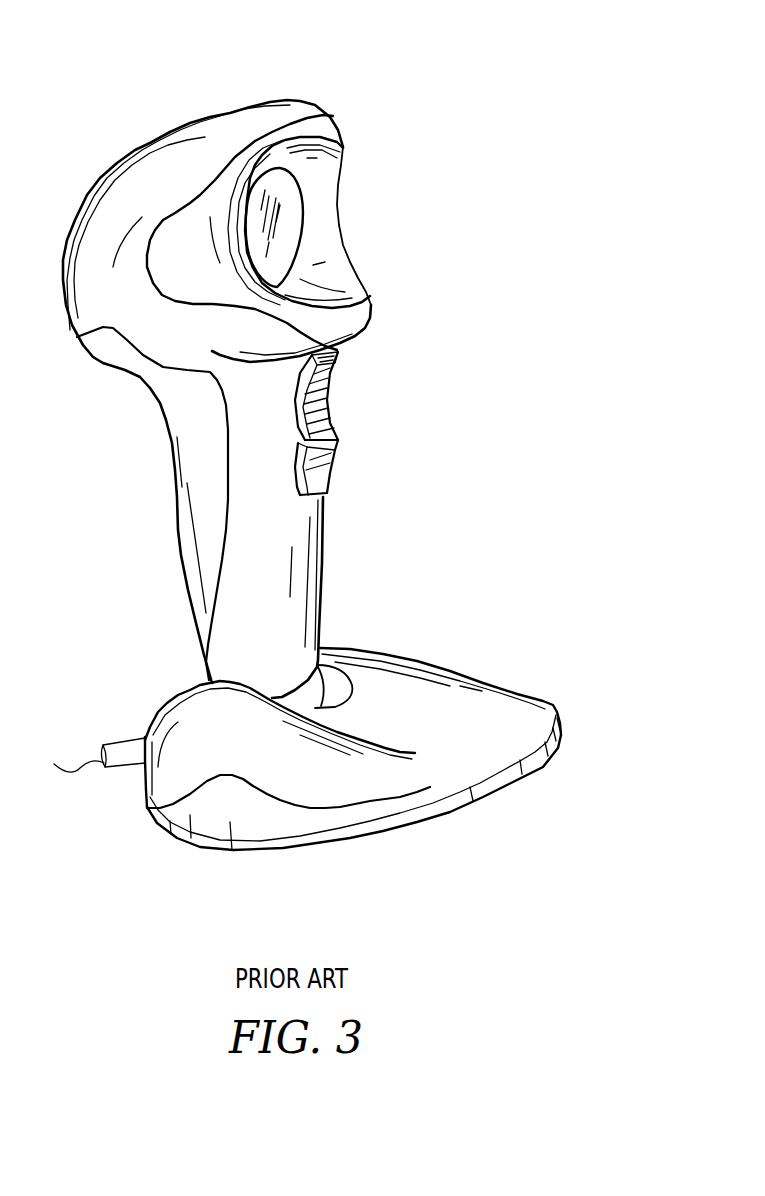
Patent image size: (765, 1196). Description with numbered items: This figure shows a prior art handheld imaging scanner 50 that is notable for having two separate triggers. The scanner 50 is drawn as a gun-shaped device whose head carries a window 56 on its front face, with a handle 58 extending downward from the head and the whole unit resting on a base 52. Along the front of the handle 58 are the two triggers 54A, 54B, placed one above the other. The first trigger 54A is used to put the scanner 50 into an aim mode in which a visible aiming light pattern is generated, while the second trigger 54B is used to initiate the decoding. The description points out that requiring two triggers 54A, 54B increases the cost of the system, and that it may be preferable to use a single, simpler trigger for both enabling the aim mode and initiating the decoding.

The handheld imaging scanner 50 is at (307, 432).
The base 52 is at (449, 695).
The first trigger 54A is at (331, 380).
The second trigger 54B is at (331, 457).
The scan window 56 is at (293, 223).
The handle 58 is at (178, 552).